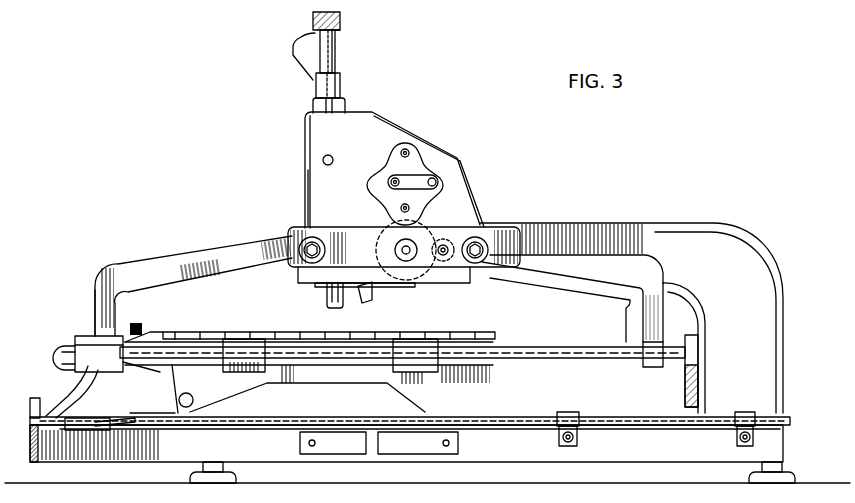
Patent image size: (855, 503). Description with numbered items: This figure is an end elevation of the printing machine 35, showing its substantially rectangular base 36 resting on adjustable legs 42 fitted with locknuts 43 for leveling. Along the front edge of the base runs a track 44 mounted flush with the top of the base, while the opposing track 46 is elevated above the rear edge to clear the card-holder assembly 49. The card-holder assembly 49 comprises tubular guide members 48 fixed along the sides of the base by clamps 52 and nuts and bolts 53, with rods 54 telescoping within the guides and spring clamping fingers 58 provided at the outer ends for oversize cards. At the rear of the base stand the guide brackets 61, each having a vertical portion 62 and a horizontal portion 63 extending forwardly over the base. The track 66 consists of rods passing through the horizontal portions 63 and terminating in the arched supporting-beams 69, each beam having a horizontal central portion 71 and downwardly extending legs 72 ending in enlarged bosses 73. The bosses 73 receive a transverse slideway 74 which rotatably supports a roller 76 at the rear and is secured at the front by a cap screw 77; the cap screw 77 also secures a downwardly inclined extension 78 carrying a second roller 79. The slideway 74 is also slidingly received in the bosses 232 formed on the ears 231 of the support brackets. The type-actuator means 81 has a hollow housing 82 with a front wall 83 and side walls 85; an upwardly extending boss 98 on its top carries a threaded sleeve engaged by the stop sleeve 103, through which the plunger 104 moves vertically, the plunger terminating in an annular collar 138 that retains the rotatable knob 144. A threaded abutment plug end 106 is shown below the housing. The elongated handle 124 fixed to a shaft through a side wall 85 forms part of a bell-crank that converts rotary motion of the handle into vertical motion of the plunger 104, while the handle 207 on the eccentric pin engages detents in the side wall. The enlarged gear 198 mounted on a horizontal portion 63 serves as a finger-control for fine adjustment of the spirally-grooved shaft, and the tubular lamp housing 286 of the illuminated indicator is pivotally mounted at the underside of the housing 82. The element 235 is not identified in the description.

The printing machine 35 is at (303, 131).
The base 36 is at (132, 462).
The adjustable legs 42 is at (760, 476).
The locknuts 43 is at (201, 469).
The rail or track 44 is at (34, 463).
The rail or track 46 is at (686, 396).
The tubular guide members 48 is at (613, 418).
The card-holder assembly 49 is at (143, 418).
The clamps 52 is at (744, 414).
The nuts and bolts 53 is at (566, 450).
The slides or rods 54 is at (180, 426).
The spring clamping fingers 58 is at (118, 416).
The guide brackets 61 is at (672, 224).
The vertical portion 62 is at (696, 315).
The horizontal portion 63 is at (553, 228).
The track 66 is at (314, 238).
The arched supporting-beams 69 is at (212, 254).
The horizontal central portion 71 is at (290, 250).
The legs 72 is at (94, 312).
The bosses 73 is at (140, 372).
The slideway 74 is at (530, 362).
The roller 76 is at (672, 352).
The cap screw 77 is at (56, 356).
The downwardly inclined extension 78 is at (70, 392).
The roller 79 is at (32, 400).
The type-actuator means 81 is at (433, 146).
The housing 82 is at (315, 155).
The front wall 83 is at (306, 185).
The side walls 85 is at (369, 179).
The boss 98 is at (308, 108).
The stop sleeve 103 is at (340, 90).
The plunger 104 is at (334, 68).
The threaded abutment plug end 106 is at (331, 310).
The handle 124 is at (302, 47).
The annular collar 138 is at (338, 31).
The knob 144 is at (341, 19).
The enlarged gear 198 is at (388, 224).
The handle 207 is at (438, 168).
The ears 231 is at (250, 382).
The bosses 232 is at (252, 332).
The table support 235 is at (398, 390).
The lamp housing 286 is at (372, 292).